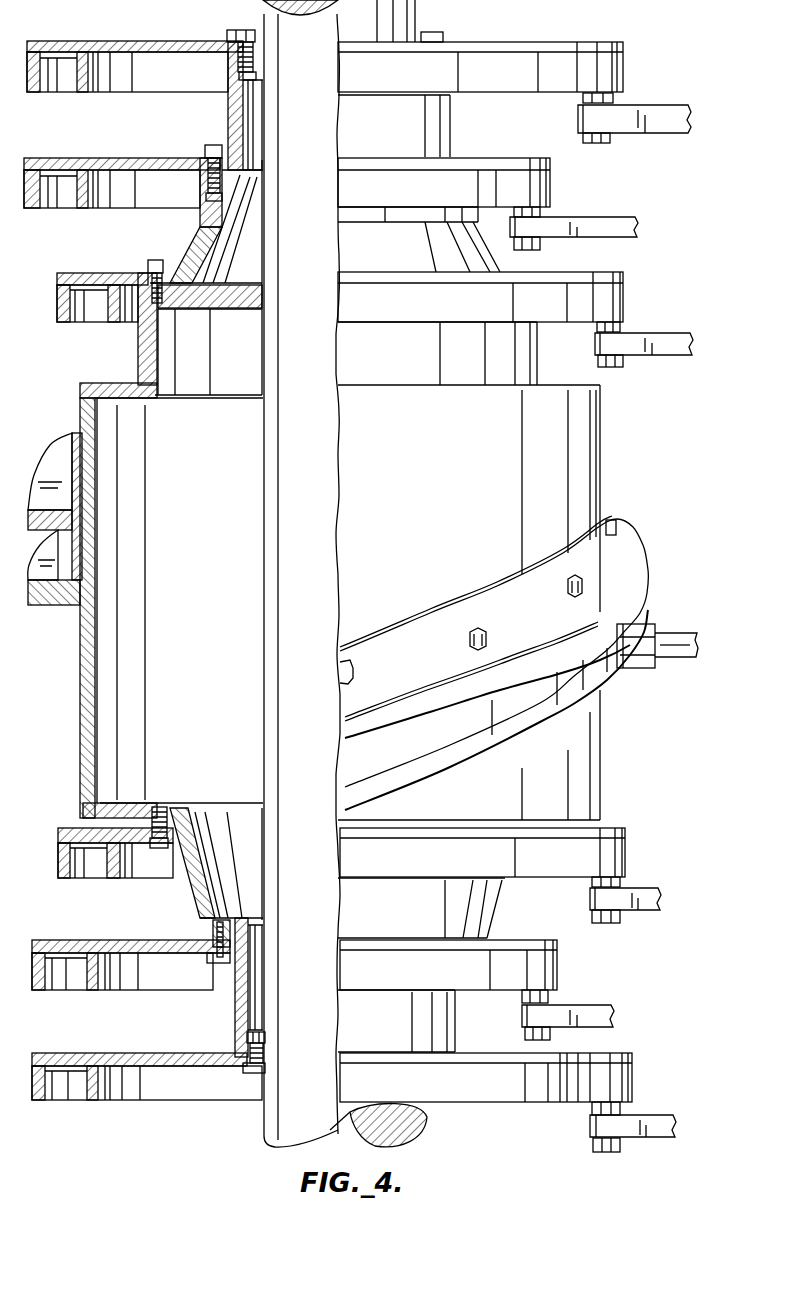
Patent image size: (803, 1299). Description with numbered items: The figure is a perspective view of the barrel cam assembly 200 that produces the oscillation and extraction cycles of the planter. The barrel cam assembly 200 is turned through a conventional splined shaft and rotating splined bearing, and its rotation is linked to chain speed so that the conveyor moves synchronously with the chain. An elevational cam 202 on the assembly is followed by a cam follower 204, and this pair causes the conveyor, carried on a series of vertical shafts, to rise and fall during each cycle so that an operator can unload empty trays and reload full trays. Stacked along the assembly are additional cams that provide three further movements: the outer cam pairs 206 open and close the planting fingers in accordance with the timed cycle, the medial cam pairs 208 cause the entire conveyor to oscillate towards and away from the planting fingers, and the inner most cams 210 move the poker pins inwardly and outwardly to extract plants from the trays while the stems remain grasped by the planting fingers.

The barrel cam assembly 200 is at (616, 426).
The elevational cam 202 is at (647, 560).
The cam follower 204 is at (670, 633).
The outer cam pairs 206 is at (624, 62).
The medial cam pairs 208 is at (551, 193).
The inner most cams 210 is at (626, 306).